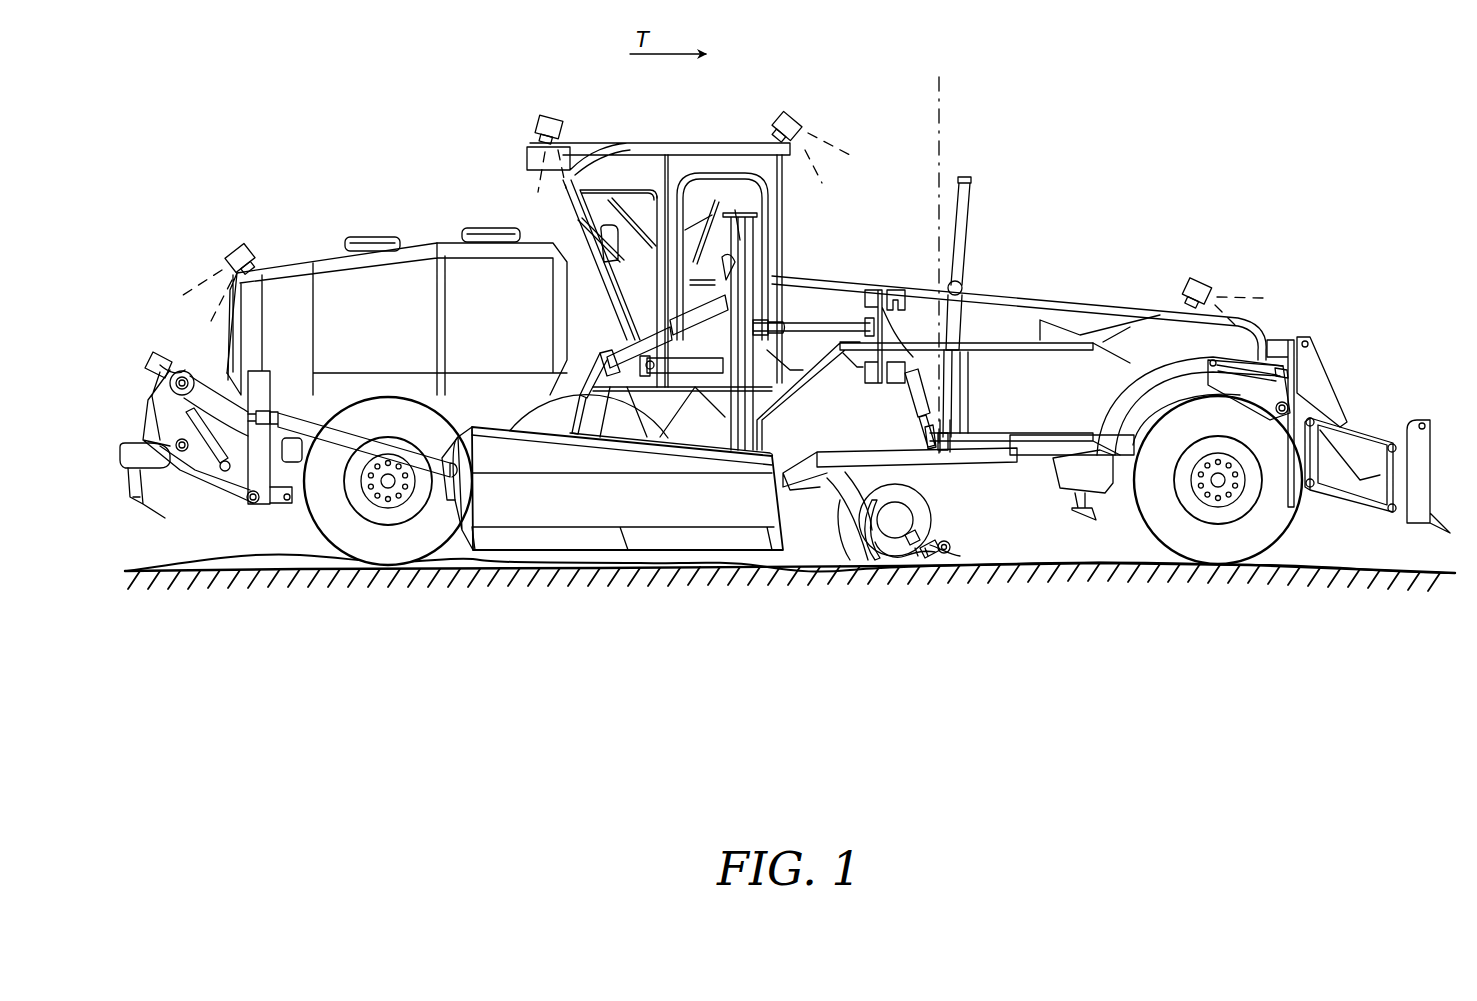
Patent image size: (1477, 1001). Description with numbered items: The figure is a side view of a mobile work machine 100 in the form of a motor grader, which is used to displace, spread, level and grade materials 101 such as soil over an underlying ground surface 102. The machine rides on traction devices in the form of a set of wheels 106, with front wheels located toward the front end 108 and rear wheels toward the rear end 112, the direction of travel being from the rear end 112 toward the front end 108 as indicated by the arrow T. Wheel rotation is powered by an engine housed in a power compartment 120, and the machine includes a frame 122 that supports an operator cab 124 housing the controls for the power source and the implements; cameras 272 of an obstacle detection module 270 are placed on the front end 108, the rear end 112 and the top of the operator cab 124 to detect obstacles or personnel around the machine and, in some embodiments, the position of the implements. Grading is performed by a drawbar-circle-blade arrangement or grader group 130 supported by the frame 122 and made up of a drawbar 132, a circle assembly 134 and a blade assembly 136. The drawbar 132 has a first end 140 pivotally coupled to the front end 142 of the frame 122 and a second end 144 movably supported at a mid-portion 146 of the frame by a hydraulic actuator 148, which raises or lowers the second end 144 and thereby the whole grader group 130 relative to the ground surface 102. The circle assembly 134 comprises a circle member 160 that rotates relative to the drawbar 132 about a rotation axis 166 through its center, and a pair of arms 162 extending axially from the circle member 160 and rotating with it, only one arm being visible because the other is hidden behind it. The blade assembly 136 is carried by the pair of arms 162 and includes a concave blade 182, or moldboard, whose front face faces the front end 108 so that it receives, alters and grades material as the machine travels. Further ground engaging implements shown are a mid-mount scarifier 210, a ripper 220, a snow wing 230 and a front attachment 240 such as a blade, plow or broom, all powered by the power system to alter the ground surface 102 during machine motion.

The mobile work machine 100 is at (1300, 112).
The materials 101 is at (947, 538).
The underlying ground surface 102 is at (1400, 573).
The wheels 106 is at (440, 560).
The front end 108 is at (1285, 340).
The rear end 112 is at (228, 340).
The power compartment 120 is at (332, 258).
The frame 122 is at (1038, 319).
The operator cab 124 is at (723, 140).
The drawbar-circle-blade arrangement 130 is at (950, 485).
The drawbar 132 is at (1040, 440).
The circle assembly 134 is at (823, 498).
The blade assembly 136 is at (907, 557).
The first end 140 is at (1128, 445).
The front end of the frame 142 is at (1145, 345).
The second end 144 is at (982, 440).
The mid-portion 146 is at (975, 272).
The hydraulic actuator 148 is at (968, 217).
The circle member 160 is at (912, 556).
The pair of arms 162 is at (853, 558).
The rotation axis 166 is at (940, 97).
The blade 182 is at (887, 492).
The mid-mount scarifier 210 is at (1107, 386).
The ripper 220 is at (122, 505).
The snow wing 230 is at (568, 504).
The front attachment 240 is at (1440, 480).
The obstacle detection module 270 is at (1237, 260).
The cameras 272 is at (245, 242).